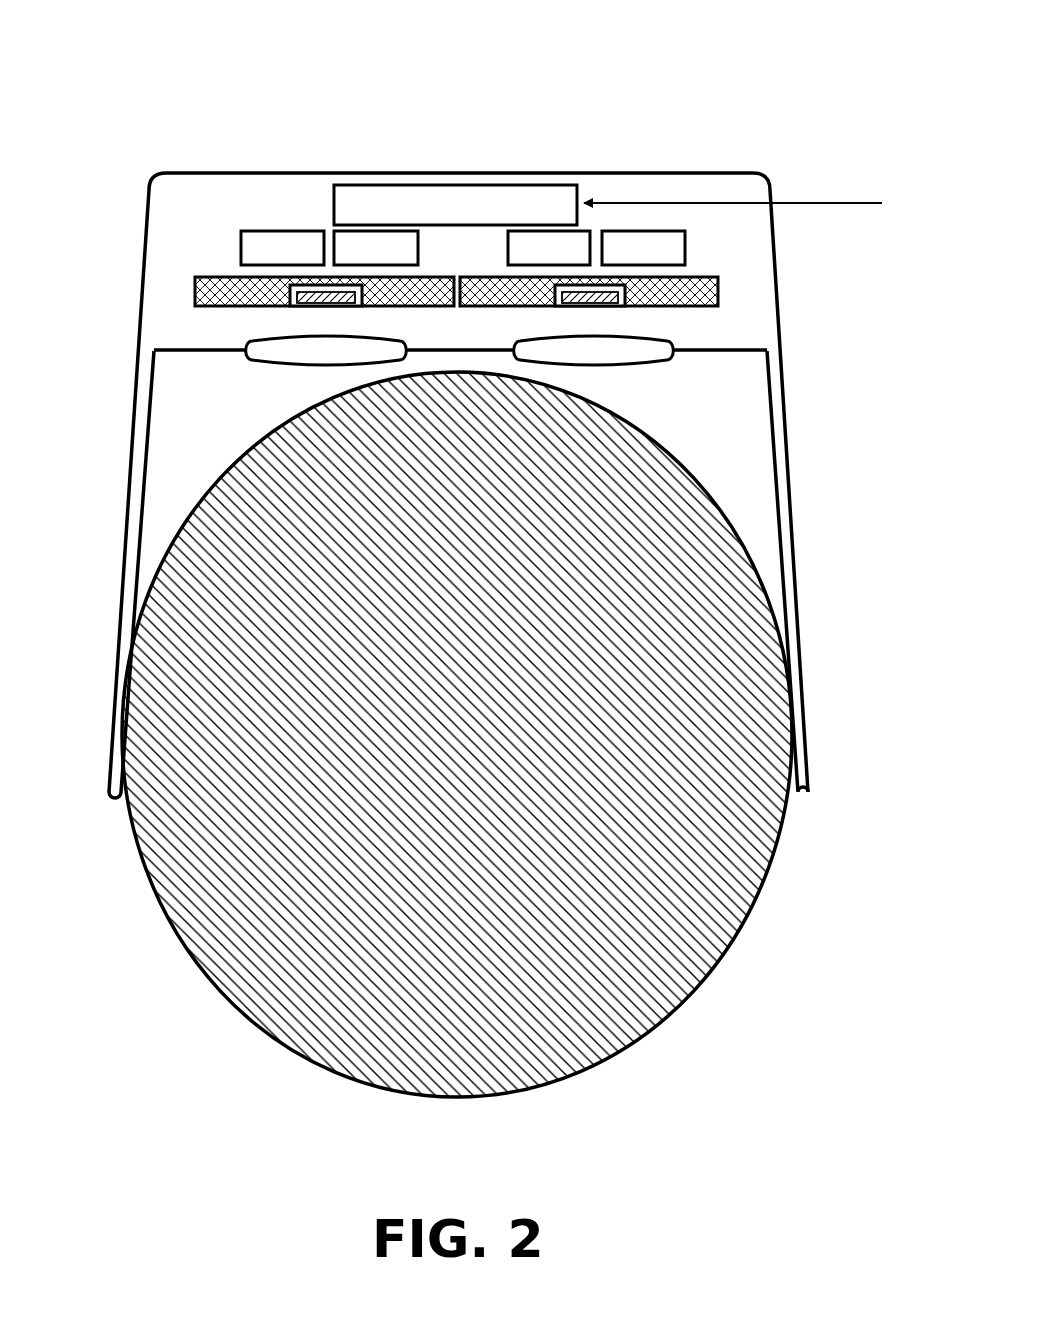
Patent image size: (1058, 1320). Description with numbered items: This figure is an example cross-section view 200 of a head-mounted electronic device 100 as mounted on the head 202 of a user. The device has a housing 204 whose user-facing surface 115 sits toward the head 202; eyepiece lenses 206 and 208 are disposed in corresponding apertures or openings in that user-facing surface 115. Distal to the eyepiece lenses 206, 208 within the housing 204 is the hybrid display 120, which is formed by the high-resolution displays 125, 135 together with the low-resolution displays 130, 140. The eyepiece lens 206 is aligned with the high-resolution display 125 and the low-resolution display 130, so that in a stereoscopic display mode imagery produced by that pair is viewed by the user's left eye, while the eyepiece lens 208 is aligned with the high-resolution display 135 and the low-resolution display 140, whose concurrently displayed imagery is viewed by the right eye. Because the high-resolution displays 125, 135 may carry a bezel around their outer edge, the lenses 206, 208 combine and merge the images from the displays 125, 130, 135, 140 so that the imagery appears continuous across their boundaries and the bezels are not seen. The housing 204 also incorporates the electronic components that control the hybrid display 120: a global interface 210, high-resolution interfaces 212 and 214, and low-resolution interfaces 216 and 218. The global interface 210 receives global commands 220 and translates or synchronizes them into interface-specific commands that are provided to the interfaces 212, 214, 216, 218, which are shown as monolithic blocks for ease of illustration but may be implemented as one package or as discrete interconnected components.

The cross-section view 200 is at (818, 50).
The sensor module 100 is at (725, 157).
The housing 204 is at (143, 282).
The user-facing surface 115 is at (159, 357).
The eyepiece lens 206 is at (279, 366).
The eyepiece lens 208 is at (633, 366).
The global interface 210 is at (440, 213).
The high-resolution interface 212 is at (267, 259).
The high-resolution interface 214 is at (361, 259).
The low-resolution interface 216 is at (534, 259).
The low-resolution interface 218 is at (628, 259).
The hybrid display 120 is at (742, 293).
The low-resolution display 130 is at (214, 307).
The low-resolution display 140 is at (705, 307).
The high-resolution display 125 is at (323, 307).
The high-resolution display 135 is at (589, 307).
The global commands 220 is at (807, 203).
The head 202 is at (141, 863).